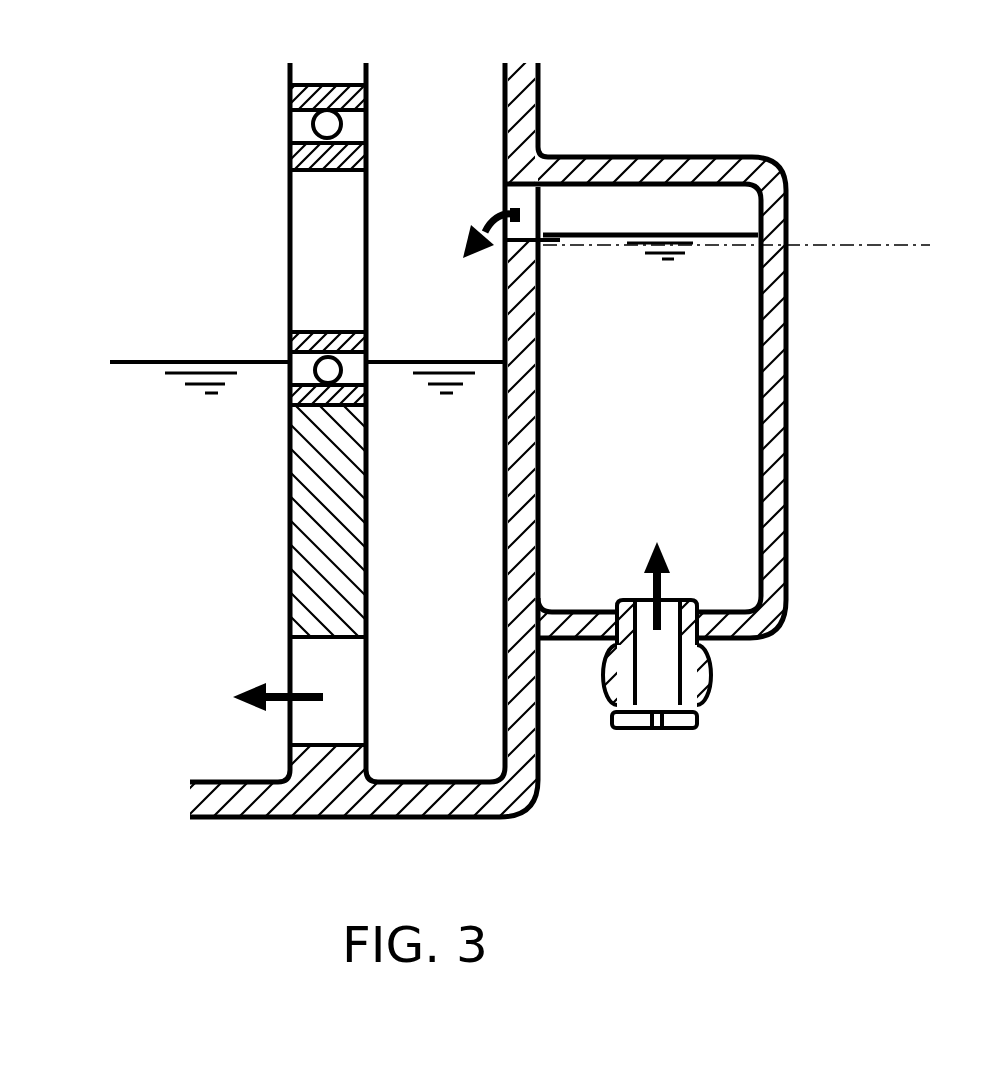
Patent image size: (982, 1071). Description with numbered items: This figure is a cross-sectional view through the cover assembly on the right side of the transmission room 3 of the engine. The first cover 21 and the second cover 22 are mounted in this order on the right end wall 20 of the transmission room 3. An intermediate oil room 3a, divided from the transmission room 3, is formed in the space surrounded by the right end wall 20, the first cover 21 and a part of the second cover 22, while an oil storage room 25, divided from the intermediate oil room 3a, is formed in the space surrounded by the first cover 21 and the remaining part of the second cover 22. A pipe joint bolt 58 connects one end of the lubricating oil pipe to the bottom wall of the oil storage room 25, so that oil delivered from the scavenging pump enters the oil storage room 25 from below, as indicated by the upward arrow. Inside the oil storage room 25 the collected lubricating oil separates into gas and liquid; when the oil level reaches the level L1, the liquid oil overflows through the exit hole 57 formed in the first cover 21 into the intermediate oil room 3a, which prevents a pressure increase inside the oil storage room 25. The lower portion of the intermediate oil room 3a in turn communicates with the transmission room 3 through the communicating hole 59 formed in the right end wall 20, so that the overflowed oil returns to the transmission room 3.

The transmission room 3 is at (210, 601).
The intermediate oil room 3a is at (460, 553).
The right end wall 20 is at (290, 500).
The first cover 21 is at (545, 778).
The second cover 22 is at (681, 157).
The oil storage room 25 is at (670, 447).
The exit hole 57 is at (508, 195).
The pipe joint bolt 58 is at (663, 730).
The communicating hole 59 is at (347, 685).
The oil level L1 is at (750, 246).